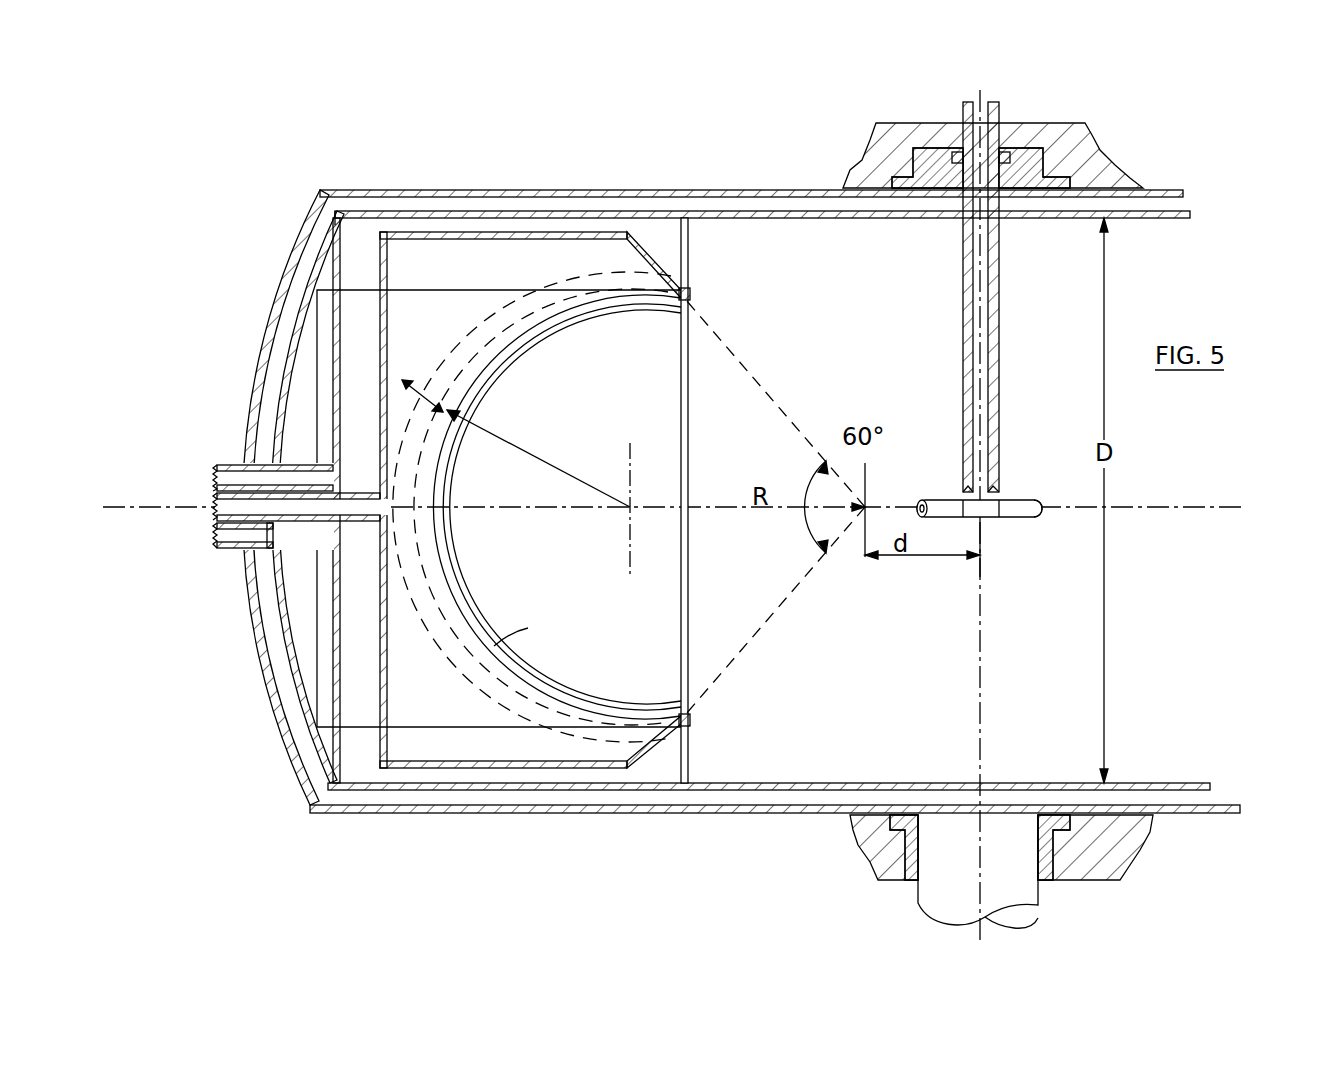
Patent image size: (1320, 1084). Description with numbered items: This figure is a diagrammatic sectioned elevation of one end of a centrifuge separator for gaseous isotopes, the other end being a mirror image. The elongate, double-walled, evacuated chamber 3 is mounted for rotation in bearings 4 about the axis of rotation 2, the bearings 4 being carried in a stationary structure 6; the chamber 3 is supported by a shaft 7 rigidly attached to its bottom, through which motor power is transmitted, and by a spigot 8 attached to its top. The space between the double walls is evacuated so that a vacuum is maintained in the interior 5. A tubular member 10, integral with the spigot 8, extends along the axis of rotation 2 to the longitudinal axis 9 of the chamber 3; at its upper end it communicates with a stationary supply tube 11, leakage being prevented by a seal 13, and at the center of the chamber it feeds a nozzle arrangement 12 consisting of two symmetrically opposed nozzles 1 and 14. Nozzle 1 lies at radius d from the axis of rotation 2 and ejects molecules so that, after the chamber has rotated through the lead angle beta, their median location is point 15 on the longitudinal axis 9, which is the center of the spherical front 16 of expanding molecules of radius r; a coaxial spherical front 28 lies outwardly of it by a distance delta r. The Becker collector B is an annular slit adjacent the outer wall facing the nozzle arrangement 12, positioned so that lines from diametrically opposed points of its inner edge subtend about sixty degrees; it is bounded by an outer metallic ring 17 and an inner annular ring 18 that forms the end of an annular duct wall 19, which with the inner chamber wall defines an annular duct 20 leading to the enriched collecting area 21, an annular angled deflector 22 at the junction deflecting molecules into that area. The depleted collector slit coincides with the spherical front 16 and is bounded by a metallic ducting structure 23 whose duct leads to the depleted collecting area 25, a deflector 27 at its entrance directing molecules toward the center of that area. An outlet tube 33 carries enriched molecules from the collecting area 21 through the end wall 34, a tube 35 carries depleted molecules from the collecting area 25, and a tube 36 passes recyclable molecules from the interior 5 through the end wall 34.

The nozzle 1 is at (918, 498).
The axis of rotation 2 is at (985, 680).
The chamber 3 is at (505, 188).
The bearings 4 is at (1052, 165).
The interior 5 is at (830, 337).
The structure 6 is at (1125, 180).
The shaft 7 is at (1025, 897).
The spigot 8 is at (957, 158).
The longitudinal axis 9 is at (1174, 505).
The tubular member 10 is at (1000, 386).
The supply tube 11 is at (994, 118).
The nozzle arrangement 12 is at (987, 520).
The seal 13 is at (1005, 158).
The nozzle 14 is at (1046, 498).
The point 15 is at (637, 504).
The spherical front 16 is at (456, 647).
The outer metallic ring 17 is at (690, 222).
The inner annular ring 18 is at (690, 291).
The annular duct wall 19 is at (598, 235).
The annular duct 20 is at (562, 218).
The collecting area 21 is at (340, 263).
The annular angled deflector 22 is at (355, 228).
The metallic ducting structure 23 is at (451, 334).
The collecting area 25 is at (300, 393).
The deflector 27 is at (325, 352).
The spherical front 28 is at (492, 680).
The outlet tube 33 is at (212, 490).
The end wall 34 is at (245, 437).
The tube 35 is at (222, 550).
The tube 36 is at (218, 510).
The Becker collector B is at (693, 264).